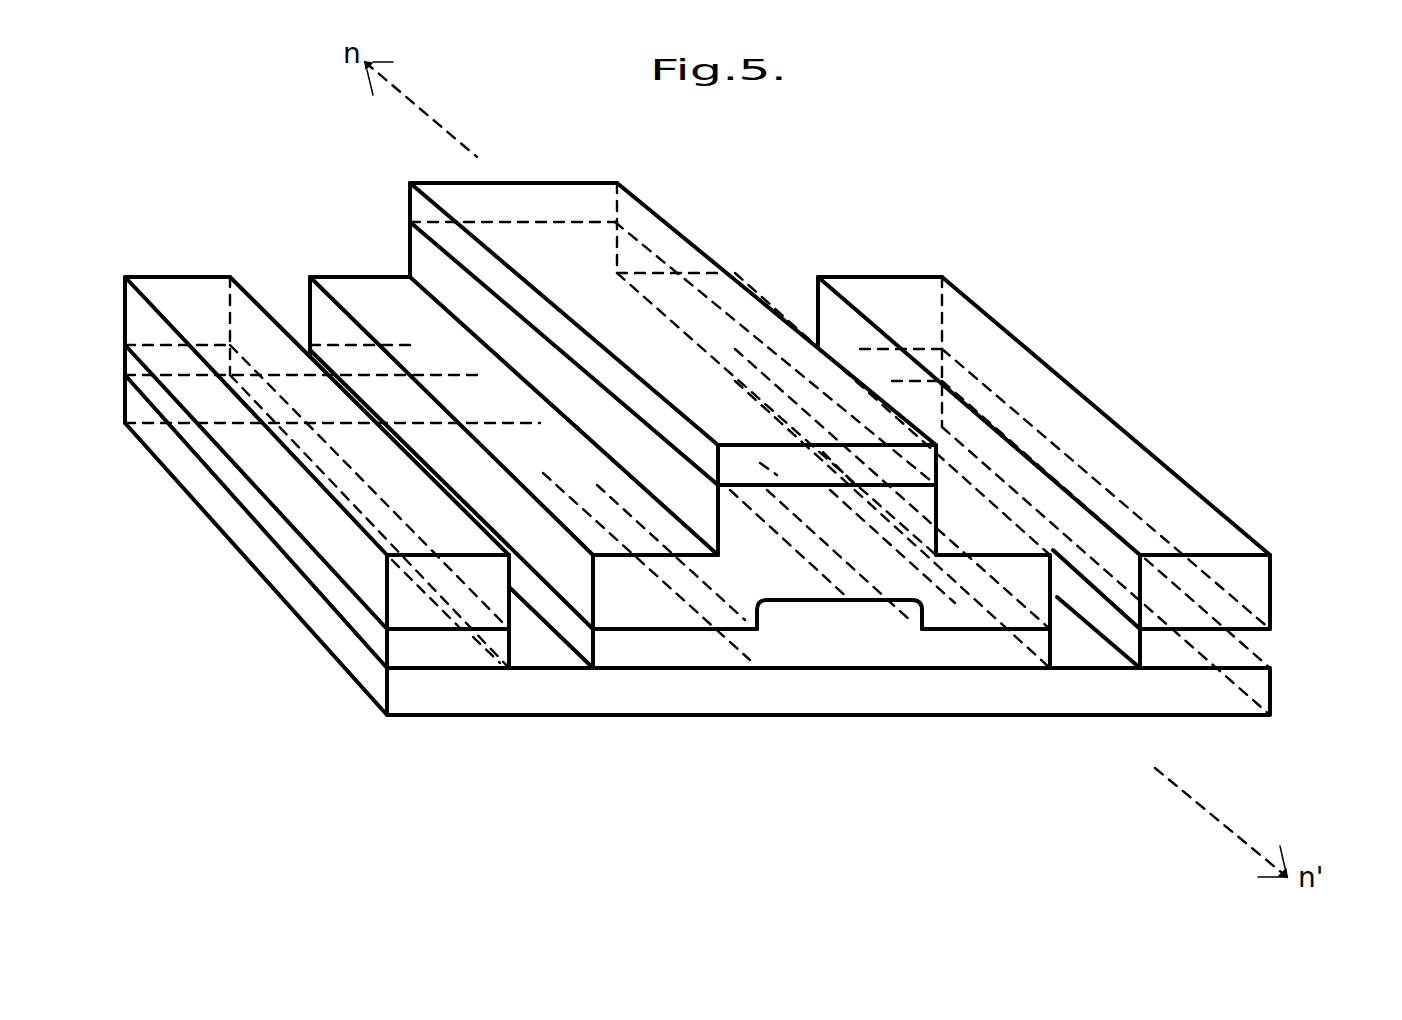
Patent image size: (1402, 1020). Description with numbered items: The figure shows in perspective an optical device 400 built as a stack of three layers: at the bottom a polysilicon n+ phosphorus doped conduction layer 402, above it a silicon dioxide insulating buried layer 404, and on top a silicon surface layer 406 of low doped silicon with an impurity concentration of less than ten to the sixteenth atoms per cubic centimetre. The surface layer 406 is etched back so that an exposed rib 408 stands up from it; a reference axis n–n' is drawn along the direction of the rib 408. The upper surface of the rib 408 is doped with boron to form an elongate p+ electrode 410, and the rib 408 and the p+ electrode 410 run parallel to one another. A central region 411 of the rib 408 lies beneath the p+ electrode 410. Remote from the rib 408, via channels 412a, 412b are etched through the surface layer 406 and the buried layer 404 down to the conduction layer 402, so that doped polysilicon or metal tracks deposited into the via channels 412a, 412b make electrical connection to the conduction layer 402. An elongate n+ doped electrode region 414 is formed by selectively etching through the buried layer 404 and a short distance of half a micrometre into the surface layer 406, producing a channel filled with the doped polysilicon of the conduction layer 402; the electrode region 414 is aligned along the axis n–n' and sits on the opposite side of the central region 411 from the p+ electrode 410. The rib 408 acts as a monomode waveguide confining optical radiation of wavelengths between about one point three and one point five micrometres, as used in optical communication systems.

The optical device 400 is at (784, 254).
The polysilicon n+ phosphorus doped conduction layer 402 is at (440, 696).
The silicon dioxide insulating buried layer 404 is at (383, 670).
The silicon surface layer 406 is at (397, 577).
The rib 408 is at (430, 272).
The p+ electrode 410 is at (893, 465).
The central region 411 is at (833, 552).
The via channel 412a is at (530, 655).
The via channel 412b is at (1093, 650).
The n+ doped electrode region 414 is at (838, 630).